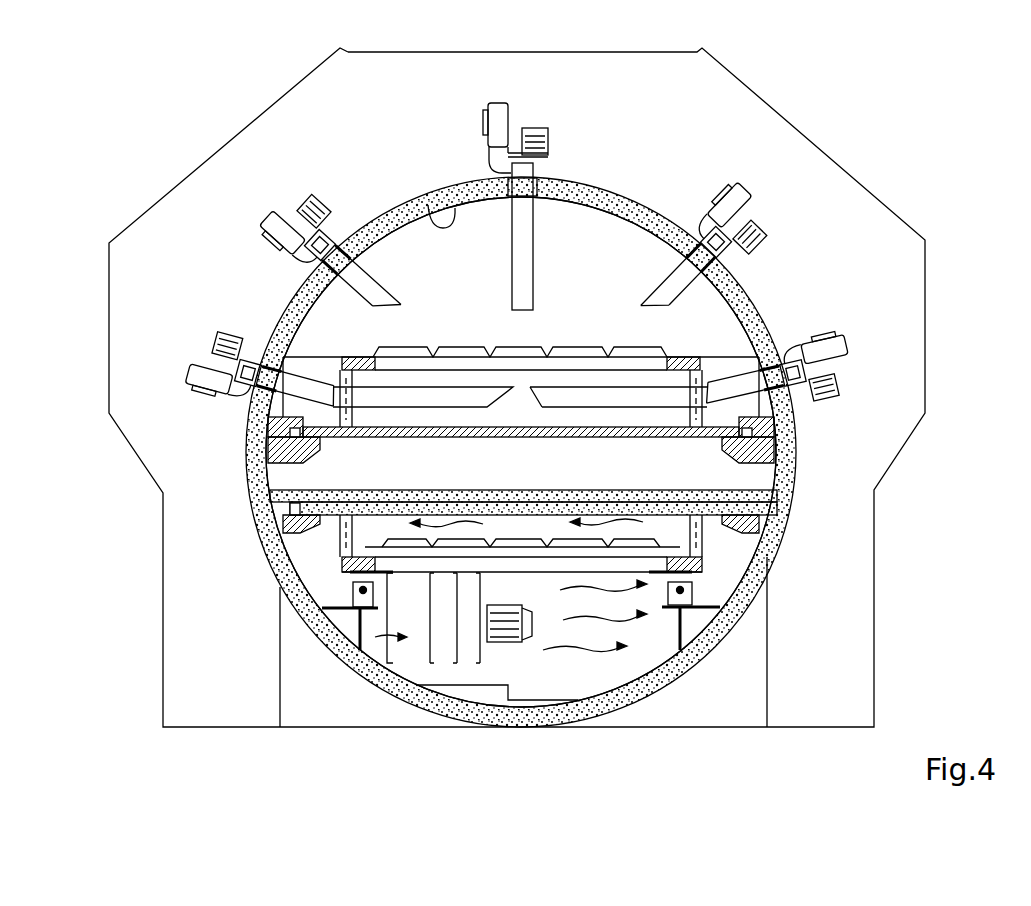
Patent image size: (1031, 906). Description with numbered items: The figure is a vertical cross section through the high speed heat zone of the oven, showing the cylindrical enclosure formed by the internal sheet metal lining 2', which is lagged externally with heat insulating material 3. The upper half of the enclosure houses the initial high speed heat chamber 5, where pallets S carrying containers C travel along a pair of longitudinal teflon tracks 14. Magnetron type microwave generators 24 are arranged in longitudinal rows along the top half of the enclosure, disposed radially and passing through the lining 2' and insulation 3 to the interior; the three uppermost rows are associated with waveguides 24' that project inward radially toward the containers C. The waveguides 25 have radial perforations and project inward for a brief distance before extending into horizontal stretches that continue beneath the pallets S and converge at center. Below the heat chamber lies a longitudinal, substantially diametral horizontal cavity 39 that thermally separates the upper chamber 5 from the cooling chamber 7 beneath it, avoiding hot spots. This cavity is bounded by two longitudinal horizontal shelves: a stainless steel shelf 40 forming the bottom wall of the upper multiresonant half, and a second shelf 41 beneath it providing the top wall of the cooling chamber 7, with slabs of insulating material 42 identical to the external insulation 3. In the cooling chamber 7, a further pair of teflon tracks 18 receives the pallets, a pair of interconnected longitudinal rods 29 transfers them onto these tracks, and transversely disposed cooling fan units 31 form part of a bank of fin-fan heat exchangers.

The magnetron type microwave generator 24 is at (499, 209).
The waveguide 24' is at (520, 284).
The heat insulating material 3 is at (632, 197).
The internal sheet metal lining 2' is at (419, 182).
The initial high speed heat chamber 5 is at (477, 263).
The pallet S is at (474, 356).
The container C is at (557, 355).
The longitudinal teflon track 14 is at (352, 357).
The waveguide 25 is at (510, 389).
The horizontal cavity 39 is at (533, 473).
The longitudinal horizontal shelf 40 is at (630, 433).
The longitudinal horizontal shelf 41 is at (487, 495).
The slab of insulating material 42 is at (787, 481).
The cooling chamber 7 is at (358, 525).
The longitudinal teflon track 18 is at (340, 557).
The longitudinal rod 29 is at (690, 590).
The cooling fan unit 31 is at (424, 648).